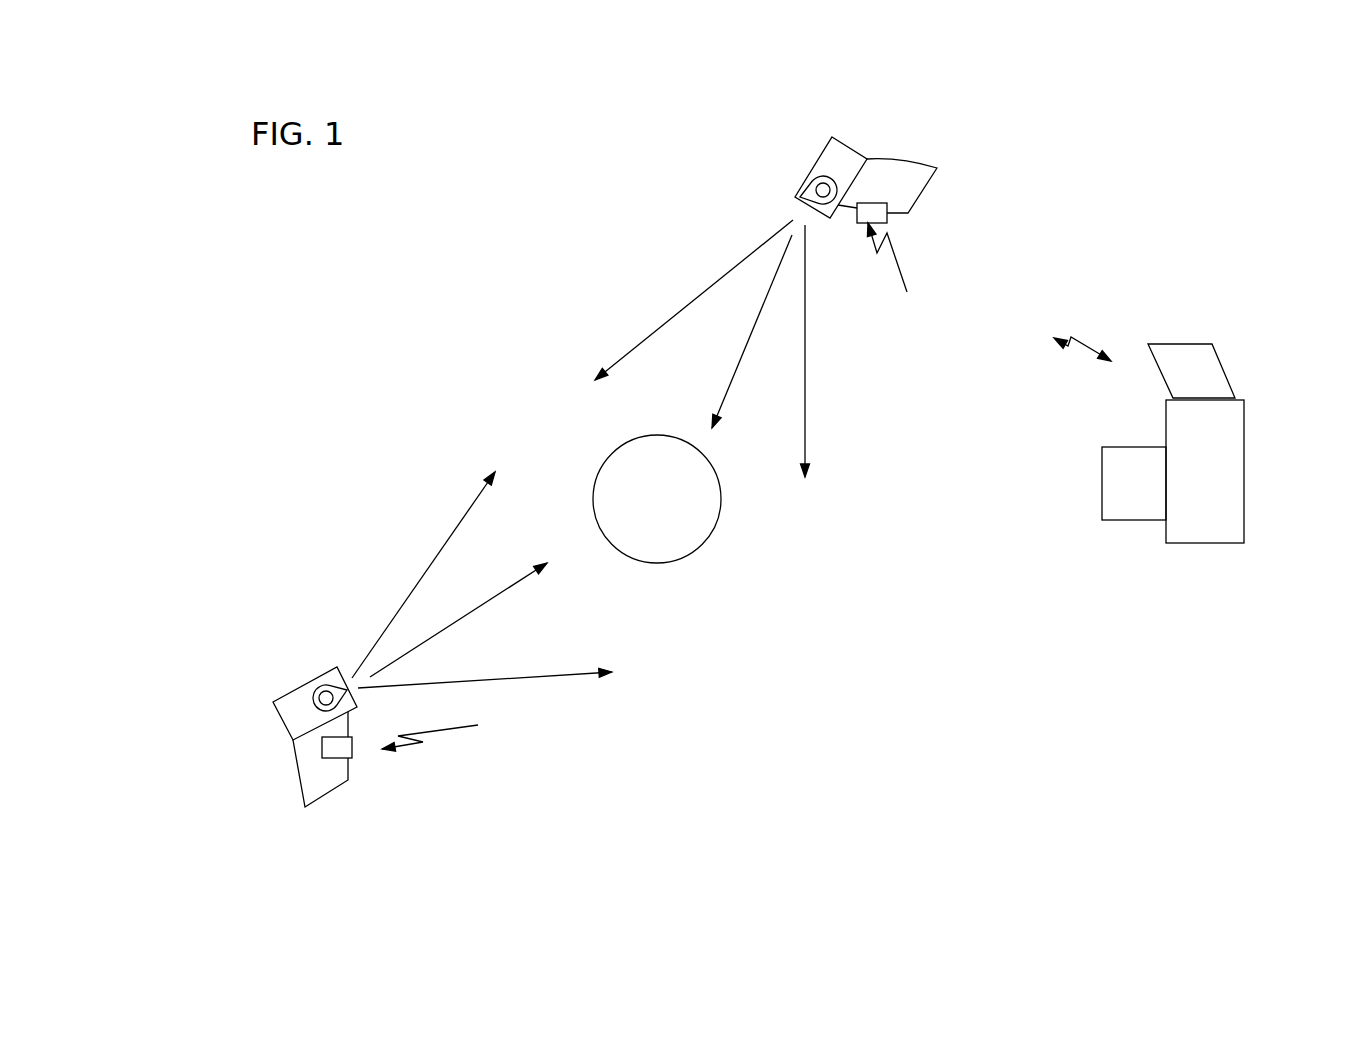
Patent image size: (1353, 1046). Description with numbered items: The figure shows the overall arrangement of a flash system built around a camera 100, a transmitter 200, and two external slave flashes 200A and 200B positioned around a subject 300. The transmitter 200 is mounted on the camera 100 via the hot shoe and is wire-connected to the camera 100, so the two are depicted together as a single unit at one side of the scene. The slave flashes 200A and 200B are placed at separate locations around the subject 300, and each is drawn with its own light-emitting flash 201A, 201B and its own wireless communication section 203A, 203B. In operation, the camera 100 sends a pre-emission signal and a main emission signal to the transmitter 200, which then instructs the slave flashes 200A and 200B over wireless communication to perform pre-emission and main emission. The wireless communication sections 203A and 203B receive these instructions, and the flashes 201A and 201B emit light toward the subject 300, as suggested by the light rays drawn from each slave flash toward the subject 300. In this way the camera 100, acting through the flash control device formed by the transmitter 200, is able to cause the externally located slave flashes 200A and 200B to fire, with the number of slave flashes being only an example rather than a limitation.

The camera 100 is at (1245, 417).
The transmitter 200 is at (1163, 344).
The slave flash 200A is at (275, 701).
The flash 201A is at (327, 670).
The wireless communication section 203A is at (352, 748).
The slave flash 200B is at (815, 152).
The flash 201B is at (803, 191).
The wireless communication section 203B is at (888, 213).
The subject 300 is at (592, 500).